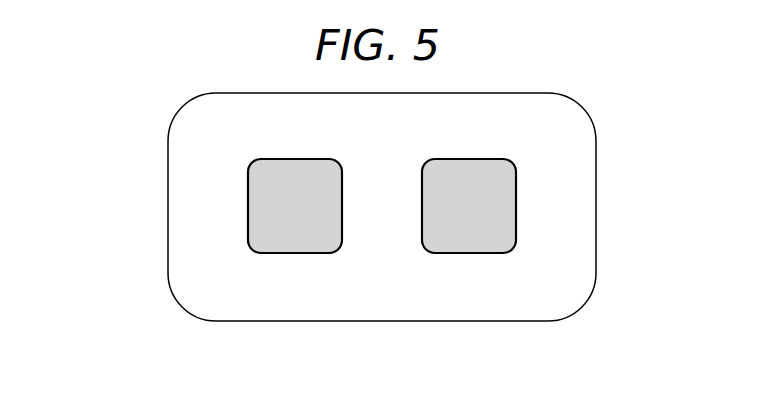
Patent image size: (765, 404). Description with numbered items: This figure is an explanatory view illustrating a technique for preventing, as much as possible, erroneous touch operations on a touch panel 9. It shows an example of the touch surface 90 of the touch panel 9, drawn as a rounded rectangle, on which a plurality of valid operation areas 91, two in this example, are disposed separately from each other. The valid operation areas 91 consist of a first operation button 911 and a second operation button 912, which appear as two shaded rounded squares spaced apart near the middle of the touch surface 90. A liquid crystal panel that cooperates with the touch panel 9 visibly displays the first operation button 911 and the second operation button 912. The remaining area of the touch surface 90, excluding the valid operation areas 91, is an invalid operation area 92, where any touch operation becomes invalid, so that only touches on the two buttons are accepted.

The touch panel 9 is at (149, 183).
The touch surface 90 is at (596, 190).
The invalid operation area 92 is at (199, 257).
The valid operation areas 91 is at (382, 206).
The first operation button 911 is at (302, 242).
The second operation button 912 is at (472, 240).